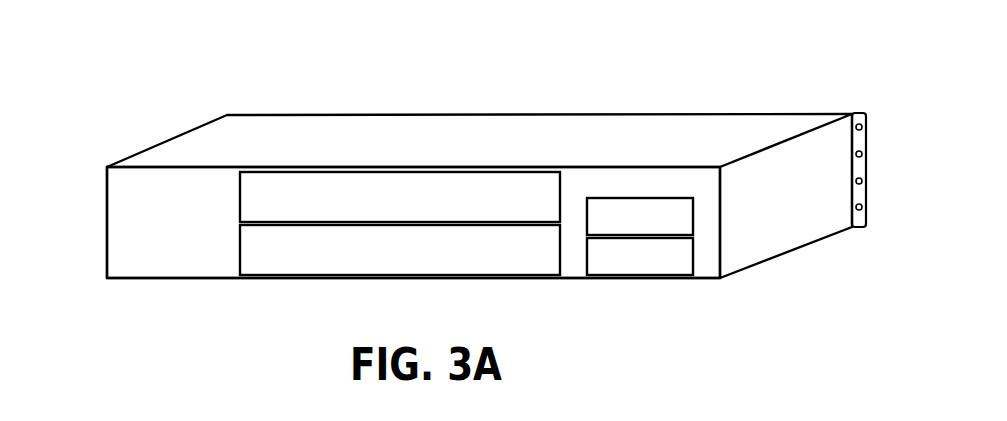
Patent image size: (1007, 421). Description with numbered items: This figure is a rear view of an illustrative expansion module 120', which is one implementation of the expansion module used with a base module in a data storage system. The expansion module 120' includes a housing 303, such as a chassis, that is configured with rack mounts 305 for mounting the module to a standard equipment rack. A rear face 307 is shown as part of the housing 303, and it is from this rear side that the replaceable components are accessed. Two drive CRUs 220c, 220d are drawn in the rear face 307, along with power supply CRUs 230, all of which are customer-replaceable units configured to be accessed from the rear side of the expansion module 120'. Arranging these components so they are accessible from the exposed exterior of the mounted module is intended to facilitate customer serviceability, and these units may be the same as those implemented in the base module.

The expansion module 120' is at (853, 49).
The housing 303 is at (197, 128).
The rear face 307 is at (182, 263).
The rack mounts 305 is at (947, 246).
The drive CRU 220c is at (483, 206).
The drive CRU 220d is at (484, 260).
The power supply CRUs 230 is at (693, 252).